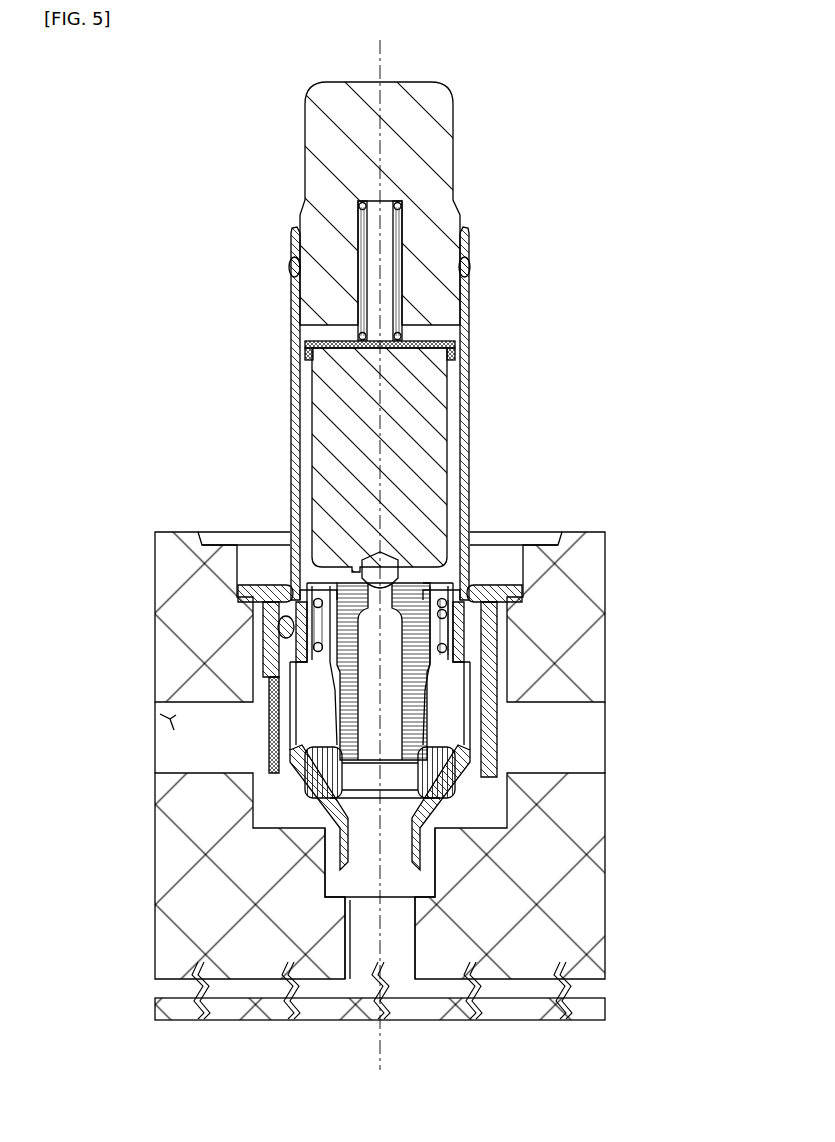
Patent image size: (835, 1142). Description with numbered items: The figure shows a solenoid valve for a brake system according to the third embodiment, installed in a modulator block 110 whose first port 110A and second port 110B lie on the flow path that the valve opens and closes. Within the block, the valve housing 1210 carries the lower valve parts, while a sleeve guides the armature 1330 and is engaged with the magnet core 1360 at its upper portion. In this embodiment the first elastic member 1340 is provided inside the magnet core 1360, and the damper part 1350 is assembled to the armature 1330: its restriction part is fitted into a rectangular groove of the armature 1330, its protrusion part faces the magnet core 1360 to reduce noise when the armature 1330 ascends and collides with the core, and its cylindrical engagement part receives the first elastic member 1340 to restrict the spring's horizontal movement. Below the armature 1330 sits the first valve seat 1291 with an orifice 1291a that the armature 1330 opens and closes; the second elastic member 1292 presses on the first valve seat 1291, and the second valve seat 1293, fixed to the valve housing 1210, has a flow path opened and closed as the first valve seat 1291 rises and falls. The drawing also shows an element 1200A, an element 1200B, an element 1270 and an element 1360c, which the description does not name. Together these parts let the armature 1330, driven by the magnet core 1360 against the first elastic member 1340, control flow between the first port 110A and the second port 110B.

The modulator block 110 is at (600, 598).
The first port 110A is at (160, 714).
The second port 110B is at (386, 950).
The inner sleeve 1200A is at (298, 723).
The lower neck 1200B is at (362, 862).
The valve housing 1210 is at (448, 806).
The bracket 1270 is at (268, 637).
The first valve seat 1291 is at (348, 584).
The orifice 1291a is at (385, 597).
The second elastic member 1292 is at (314, 642).
The second valve seat 1293 is at (322, 778).
The armature 1330 is at (440, 440).
The first elastic member 1340 is at (358, 203).
The damper part 1350 is at (452, 338).
The magnet core 1360 is at (440, 156).
The sleeve 1360c is at (362, 222).